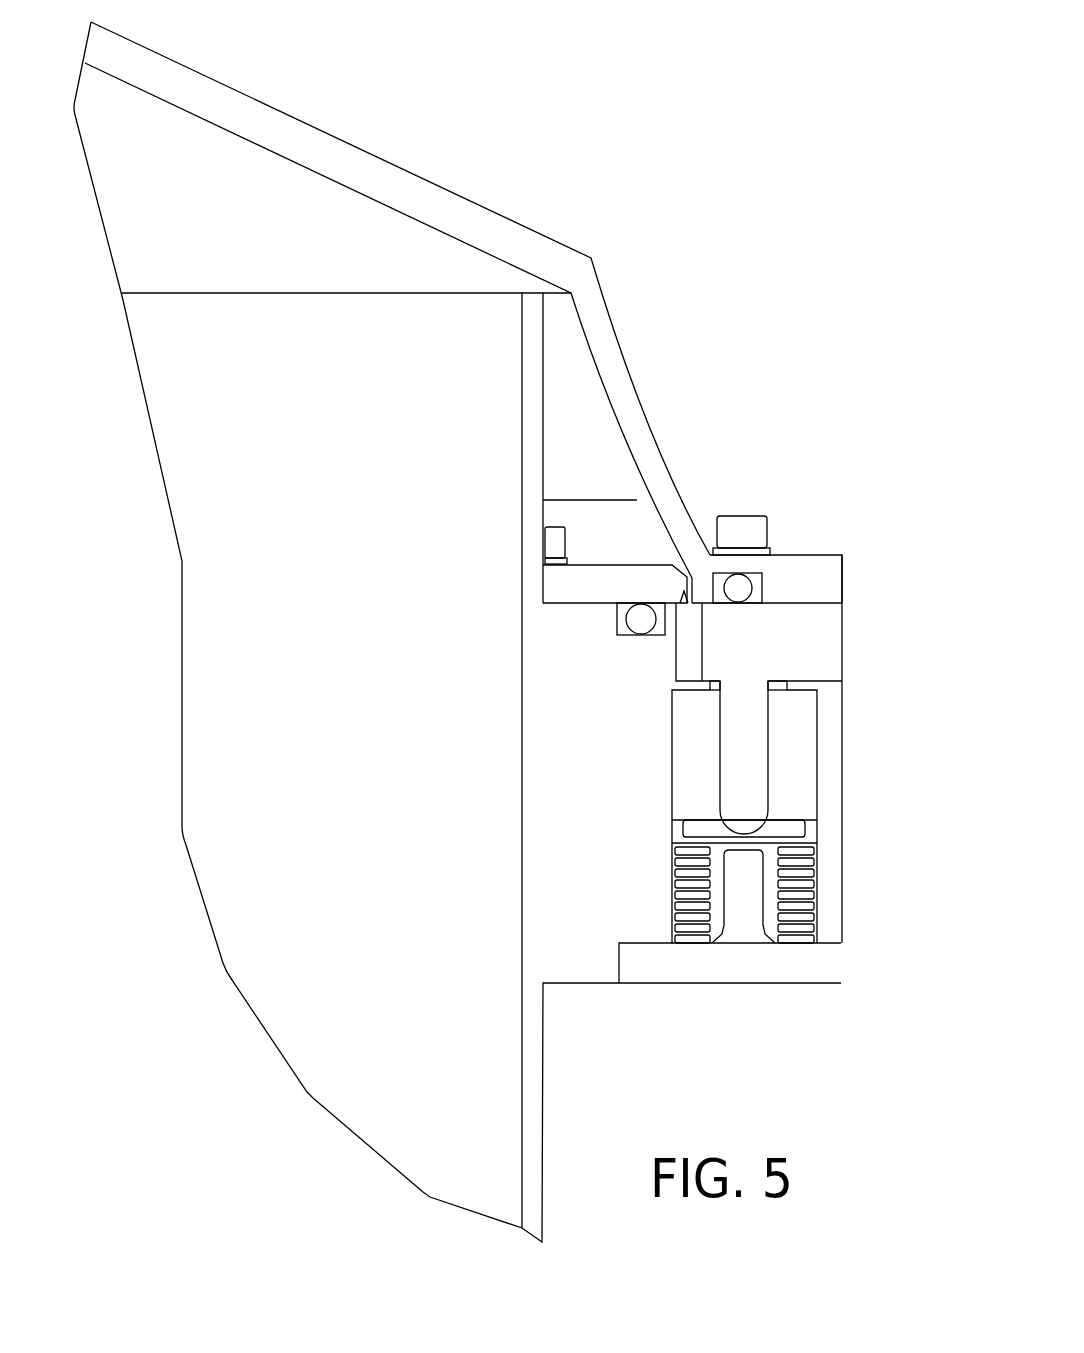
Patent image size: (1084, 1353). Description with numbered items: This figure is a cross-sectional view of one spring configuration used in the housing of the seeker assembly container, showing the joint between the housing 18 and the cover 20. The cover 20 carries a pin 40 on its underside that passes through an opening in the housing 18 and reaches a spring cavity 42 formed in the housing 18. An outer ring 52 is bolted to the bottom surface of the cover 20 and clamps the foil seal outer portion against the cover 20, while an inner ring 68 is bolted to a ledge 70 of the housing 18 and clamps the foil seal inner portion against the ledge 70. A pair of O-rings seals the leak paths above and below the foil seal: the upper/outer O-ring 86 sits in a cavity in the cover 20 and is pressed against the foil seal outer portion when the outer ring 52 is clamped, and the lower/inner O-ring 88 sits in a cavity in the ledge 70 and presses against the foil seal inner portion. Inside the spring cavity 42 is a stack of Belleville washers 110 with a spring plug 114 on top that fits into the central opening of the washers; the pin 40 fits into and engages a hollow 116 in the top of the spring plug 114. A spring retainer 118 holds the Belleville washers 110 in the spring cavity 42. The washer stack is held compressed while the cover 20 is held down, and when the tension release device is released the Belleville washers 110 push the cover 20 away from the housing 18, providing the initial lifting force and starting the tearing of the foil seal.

The housing 18 is at (532, 1032).
The cover 20 is at (618, 373).
The pin 40 is at (752, 728).
The spring cavity 42 is at (795, 733).
The outer ring 52 is at (813, 642).
The inner ring 68 is at (595, 577).
The ledge 70 is at (557, 680).
The upper/outer O-ring 86 is at (632, 620).
The lower/inner O-ring 88 is at (737, 587).
The stack of Belleville washers 110 is at (822, 887).
The spring plug 114 is at (812, 830).
The hollow 116 is at (705, 827).
The spring retainer 118 is at (650, 963).